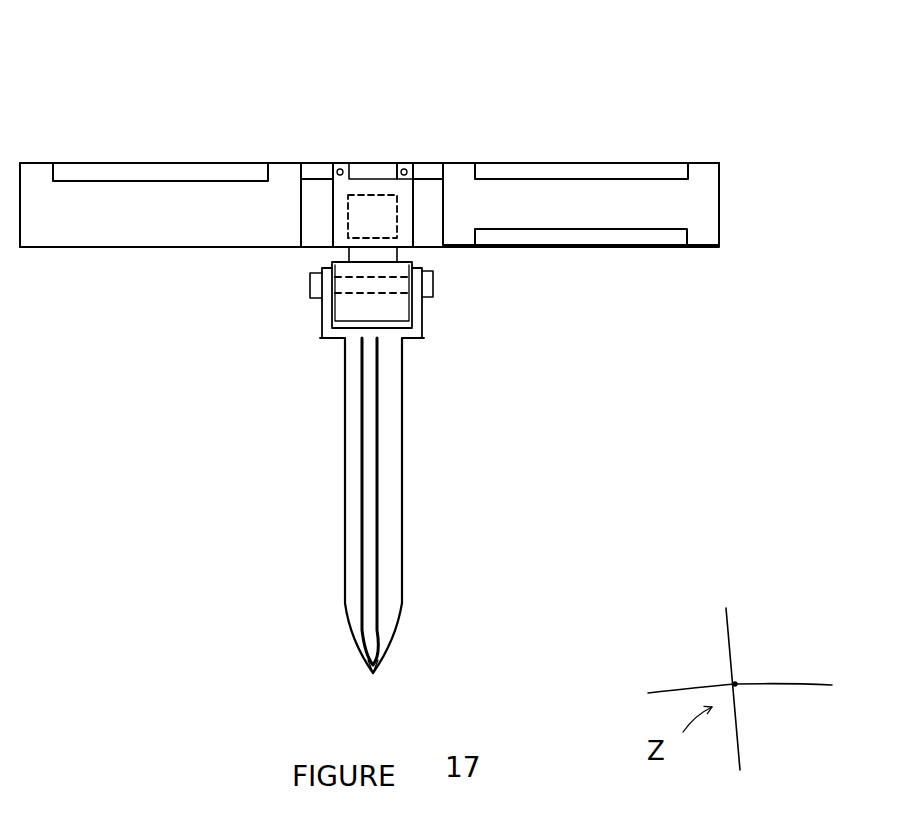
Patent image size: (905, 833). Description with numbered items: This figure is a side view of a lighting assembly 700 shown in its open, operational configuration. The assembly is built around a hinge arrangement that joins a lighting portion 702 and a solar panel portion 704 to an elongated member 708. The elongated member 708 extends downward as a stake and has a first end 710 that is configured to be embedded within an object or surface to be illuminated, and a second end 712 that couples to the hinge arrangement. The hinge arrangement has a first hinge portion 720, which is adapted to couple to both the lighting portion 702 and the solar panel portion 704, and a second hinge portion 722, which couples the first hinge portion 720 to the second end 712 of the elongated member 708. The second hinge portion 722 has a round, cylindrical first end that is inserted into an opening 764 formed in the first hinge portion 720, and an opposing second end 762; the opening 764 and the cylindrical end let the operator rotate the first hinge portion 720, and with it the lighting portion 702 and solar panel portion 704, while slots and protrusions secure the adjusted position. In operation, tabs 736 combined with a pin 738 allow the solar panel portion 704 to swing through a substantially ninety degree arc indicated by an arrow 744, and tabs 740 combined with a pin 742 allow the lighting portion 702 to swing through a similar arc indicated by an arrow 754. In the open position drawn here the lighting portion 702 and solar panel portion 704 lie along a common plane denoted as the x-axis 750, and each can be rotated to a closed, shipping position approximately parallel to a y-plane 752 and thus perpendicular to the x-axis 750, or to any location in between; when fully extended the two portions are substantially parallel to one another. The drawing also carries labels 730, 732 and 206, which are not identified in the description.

The lighting assembly 700 is at (707, 73).
The lighting portion 702 is at (558, 128).
The solar panel portion 704 is at (165, 125).
The arrow 744 is at (145, 52).
The arrow 754 is at (653, 100).
The second end 712 is at (287, 328).
The first hinge portion 720 is at (372, 162).
The second hinge portion 722 is at (415, 263).
The center block recess 730 is at (383, 162).
The connecting stubs 732 is at (333, 252).
The tabs 736 is at (337, 162).
The pin 738 is at (350, 162).
The tabs 740 is at (408, 162).
The pin 742 is at (405, 176).
The opening 764 is at (348, 218).
The second end 762 is at (424, 332).
The elongated member 708 is at (402, 477).
The first end 710 is at (348, 673).
The x-axis 750 is at (667, 696).
The y-plane 752 is at (712, 651).
The housing side 206 is at (275, 280).